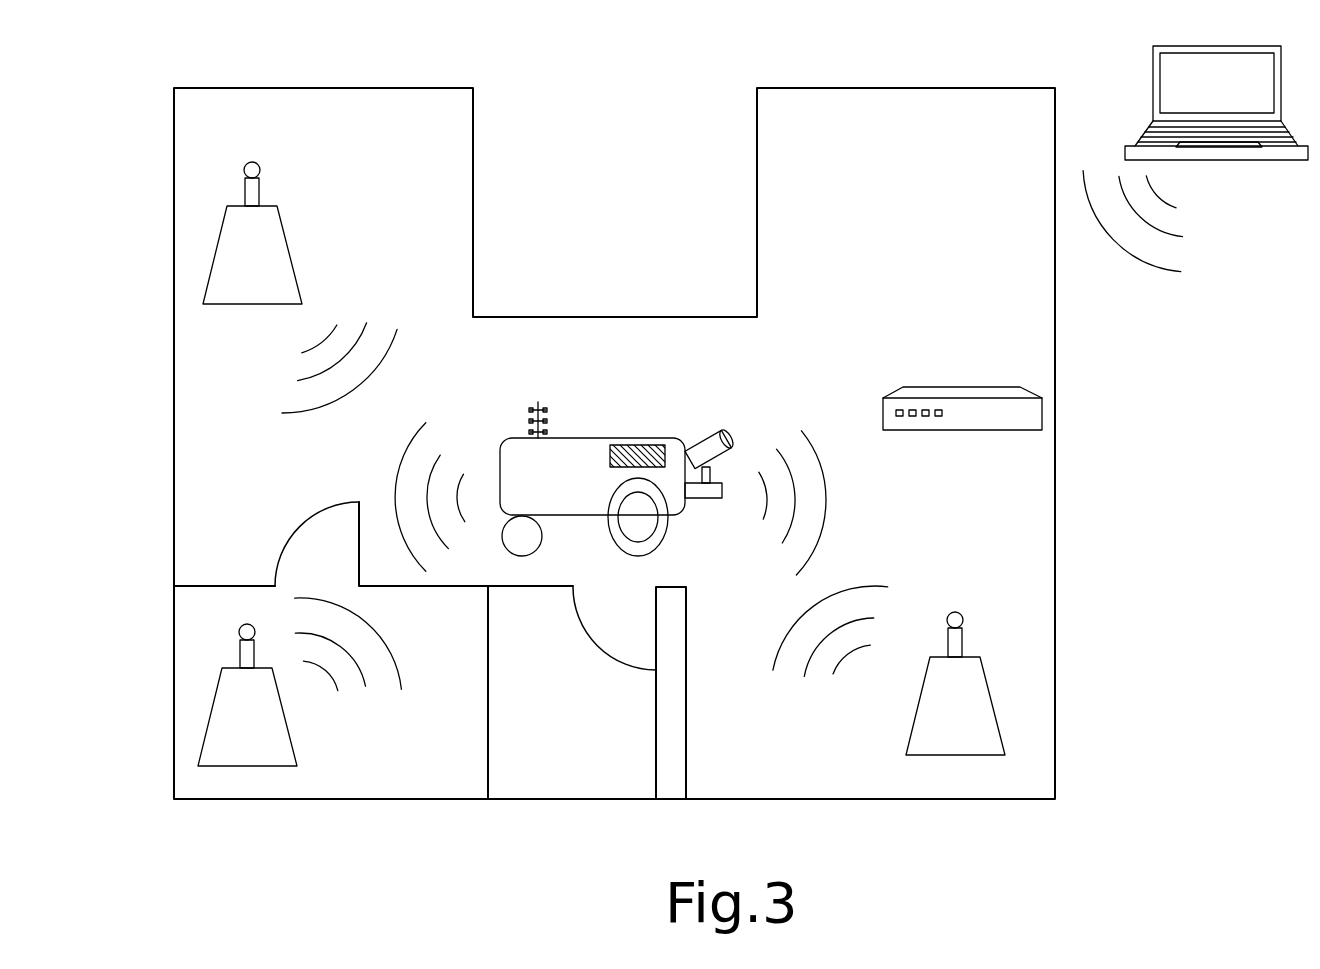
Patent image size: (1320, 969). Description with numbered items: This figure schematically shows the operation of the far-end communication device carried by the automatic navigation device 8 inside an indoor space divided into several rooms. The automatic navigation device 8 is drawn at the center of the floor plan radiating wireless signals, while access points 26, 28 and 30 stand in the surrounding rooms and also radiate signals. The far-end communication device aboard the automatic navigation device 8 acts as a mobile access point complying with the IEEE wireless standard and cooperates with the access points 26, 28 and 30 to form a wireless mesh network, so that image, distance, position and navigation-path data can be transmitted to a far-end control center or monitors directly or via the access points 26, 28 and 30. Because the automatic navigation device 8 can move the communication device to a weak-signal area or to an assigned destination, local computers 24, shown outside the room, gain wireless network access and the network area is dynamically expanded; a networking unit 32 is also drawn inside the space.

The automatic navigation device 8 is at (585, 458).
The local computer 24 is at (1210, 162).
The access point 26 is at (278, 216).
The access point 28 is at (288, 712).
The access point 30 is at (902, 755).
The wireless router / base station 32 is at (984, 388).